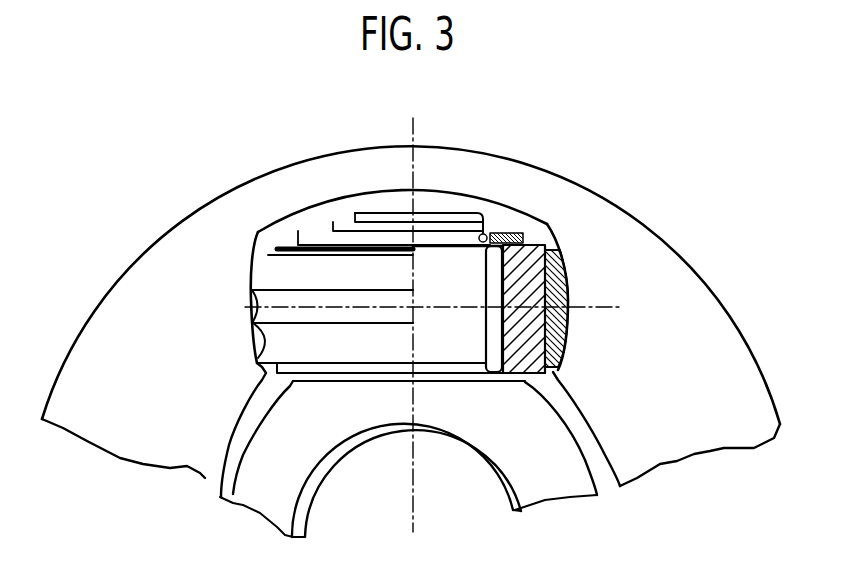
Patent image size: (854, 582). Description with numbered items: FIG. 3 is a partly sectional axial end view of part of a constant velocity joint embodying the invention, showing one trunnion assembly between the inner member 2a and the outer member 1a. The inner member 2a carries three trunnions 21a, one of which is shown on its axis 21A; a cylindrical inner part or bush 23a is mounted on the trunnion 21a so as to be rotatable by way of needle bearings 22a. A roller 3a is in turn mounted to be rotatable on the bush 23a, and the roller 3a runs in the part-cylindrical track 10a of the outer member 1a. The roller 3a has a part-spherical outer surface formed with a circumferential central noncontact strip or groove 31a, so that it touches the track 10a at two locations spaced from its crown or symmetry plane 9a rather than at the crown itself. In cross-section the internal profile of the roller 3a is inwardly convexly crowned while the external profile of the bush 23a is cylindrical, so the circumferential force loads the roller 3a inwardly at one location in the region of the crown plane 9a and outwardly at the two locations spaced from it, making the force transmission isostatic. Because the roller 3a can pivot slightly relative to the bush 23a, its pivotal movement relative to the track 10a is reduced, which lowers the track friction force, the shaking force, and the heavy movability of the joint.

The outer member 1a is at (112, 325).
The inner member 2a is at (245, 494).
The roller 3a is at (295, 275).
The crown or symmetry plane 9a is at (600, 306).
The track 10a is at (255, 297).
The circumferential central noncontact strip or groove 31a is at (250, 306).
The trunnion 21a is at (435, 270).
The needle bearings 22a is at (493, 270).
The cylindrical inner part or bush 23a is at (530, 262).
The rotation axis 21A is at (416, 508).